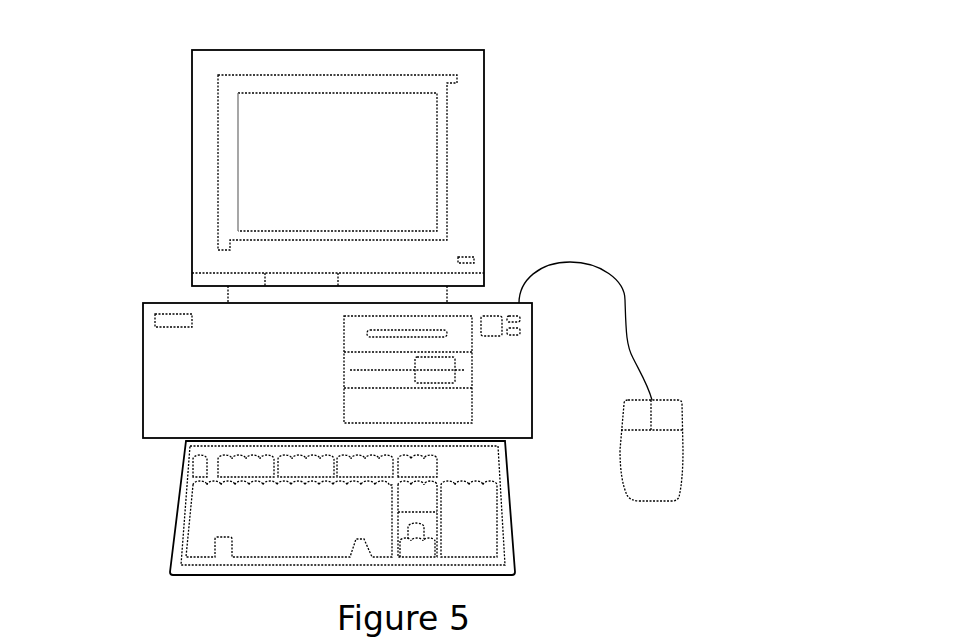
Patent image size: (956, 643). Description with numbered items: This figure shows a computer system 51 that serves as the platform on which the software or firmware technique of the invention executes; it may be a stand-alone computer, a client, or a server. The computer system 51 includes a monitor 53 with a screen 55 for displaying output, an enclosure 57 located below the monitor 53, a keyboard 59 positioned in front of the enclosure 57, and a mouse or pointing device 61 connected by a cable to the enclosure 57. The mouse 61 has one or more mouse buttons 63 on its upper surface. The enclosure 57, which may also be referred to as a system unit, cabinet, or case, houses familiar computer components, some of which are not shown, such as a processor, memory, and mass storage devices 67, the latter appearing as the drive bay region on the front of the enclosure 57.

The computer system 51 is at (505, 28).
The monitor 53 is at (484, 138).
The screen 55 is at (257, 152).
The enclosure 57 is at (168, 302).
The keyboard 59 is at (218, 574).
The mouse or pointing device 61 is at (652, 487).
The mouse buttons 63 is at (642, 420).
The mass storage devices 67 is at (466, 318).